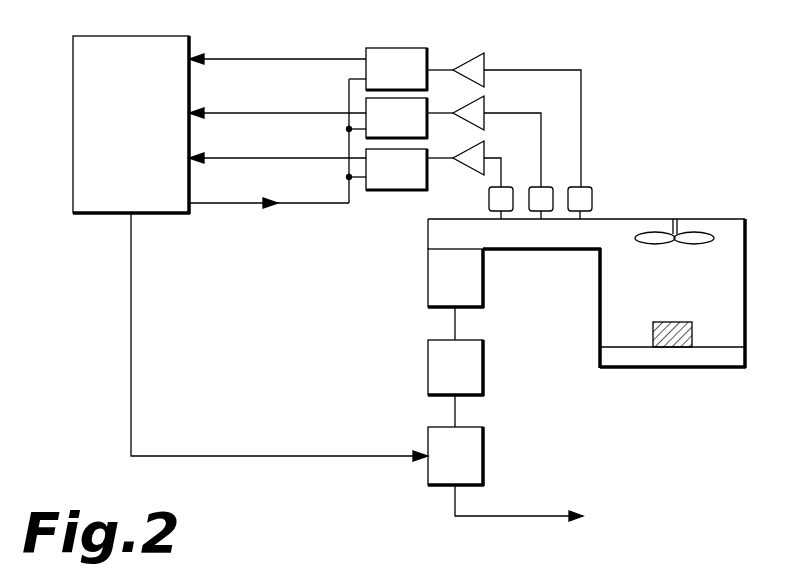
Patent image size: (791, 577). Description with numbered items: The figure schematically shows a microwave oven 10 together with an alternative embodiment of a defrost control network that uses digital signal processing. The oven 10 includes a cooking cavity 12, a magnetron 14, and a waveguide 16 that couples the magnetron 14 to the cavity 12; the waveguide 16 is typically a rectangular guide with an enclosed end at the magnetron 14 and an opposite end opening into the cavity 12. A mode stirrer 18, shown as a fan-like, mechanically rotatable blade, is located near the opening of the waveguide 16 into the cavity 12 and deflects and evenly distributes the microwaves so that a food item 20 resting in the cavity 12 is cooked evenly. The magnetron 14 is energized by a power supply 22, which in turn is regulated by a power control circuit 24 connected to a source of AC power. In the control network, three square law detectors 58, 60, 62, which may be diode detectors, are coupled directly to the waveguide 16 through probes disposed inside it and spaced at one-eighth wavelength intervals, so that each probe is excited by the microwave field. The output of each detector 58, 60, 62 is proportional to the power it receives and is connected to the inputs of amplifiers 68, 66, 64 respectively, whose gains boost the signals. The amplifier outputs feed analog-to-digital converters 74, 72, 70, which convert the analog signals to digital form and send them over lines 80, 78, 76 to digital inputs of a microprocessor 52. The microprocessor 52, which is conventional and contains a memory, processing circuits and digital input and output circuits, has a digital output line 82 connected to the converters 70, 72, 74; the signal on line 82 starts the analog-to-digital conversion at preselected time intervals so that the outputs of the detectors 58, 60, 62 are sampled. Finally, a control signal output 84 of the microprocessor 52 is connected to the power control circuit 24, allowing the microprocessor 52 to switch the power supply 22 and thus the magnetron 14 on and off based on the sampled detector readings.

The microwave oven 10 is at (700, 374).
The cooking cavity 12 is at (655, 298).
The magnetron 14 is at (467, 287).
The waveguide 16 is at (562, 249).
The mode stirrer 18 is at (690, 234).
The food item 20 is at (677, 322).
The power supply 22 is at (468, 377).
The power control circuit 24 is at (468, 469).
The microprocessor 52 is at (140, 134).
The square law detector 58 is at (591, 187).
The square law detector 60 is at (542, 187).
The square law detector 62 is at (503, 187).
The amplifier 64 is at (487, 154).
The amplifier 66 is at (487, 109).
The amplifier 68 is at (458, 63).
The analog-to-digital converter 70 is at (410, 179).
The analog-to-digital converter 72 is at (410, 128).
The analog-to-digital converter 74 is at (410, 80).
The line 76 is at (254, 158).
The line 78 is at (262, 113).
The line 80 is at (292, 58).
The digital output line 82 is at (290, 203).
The control signal output 84 is at (131, 370).